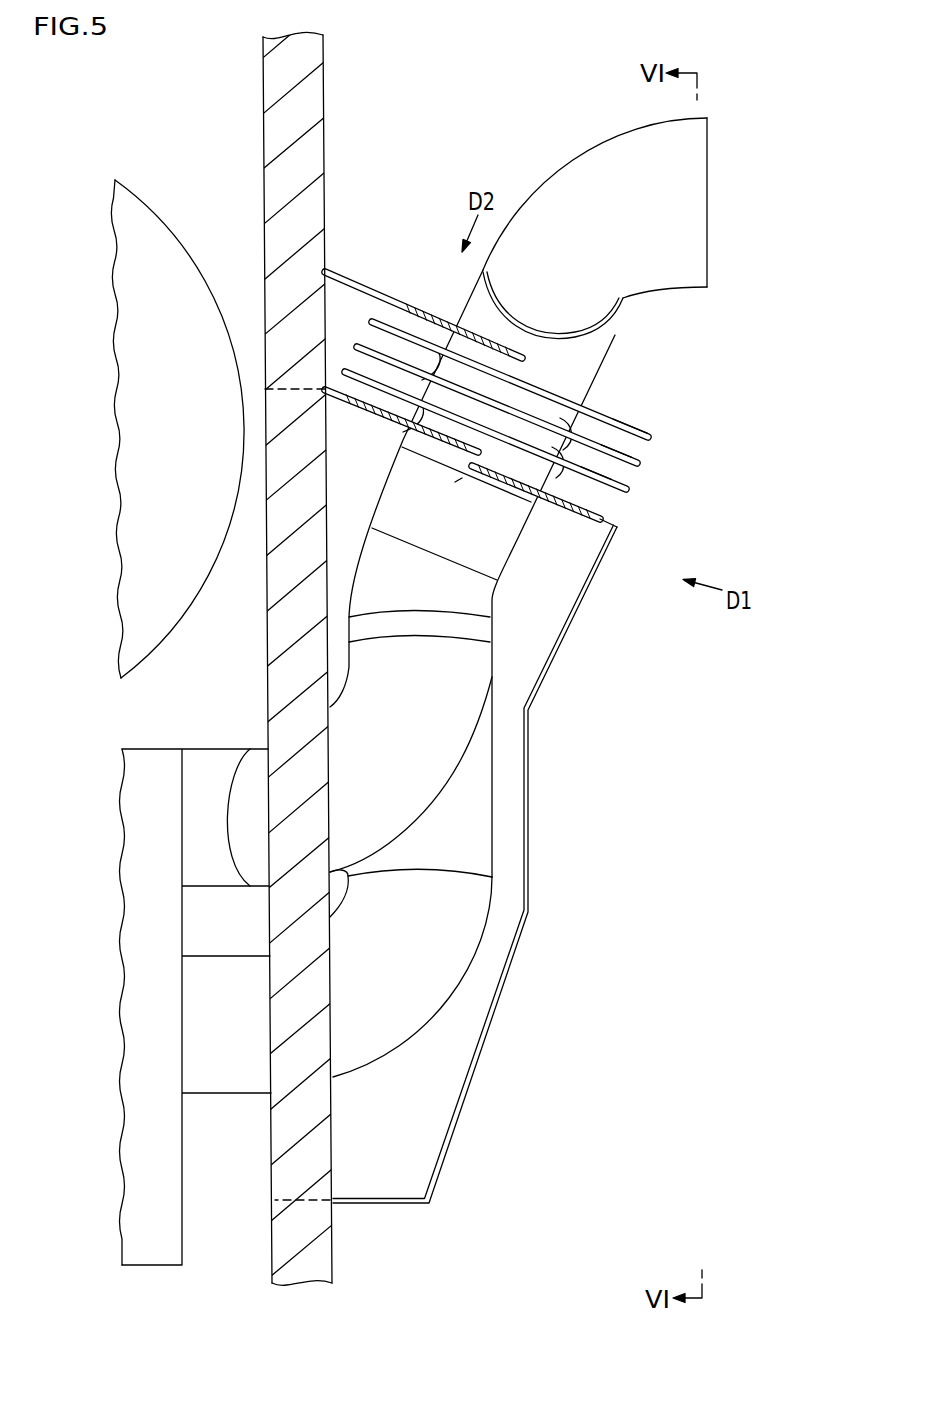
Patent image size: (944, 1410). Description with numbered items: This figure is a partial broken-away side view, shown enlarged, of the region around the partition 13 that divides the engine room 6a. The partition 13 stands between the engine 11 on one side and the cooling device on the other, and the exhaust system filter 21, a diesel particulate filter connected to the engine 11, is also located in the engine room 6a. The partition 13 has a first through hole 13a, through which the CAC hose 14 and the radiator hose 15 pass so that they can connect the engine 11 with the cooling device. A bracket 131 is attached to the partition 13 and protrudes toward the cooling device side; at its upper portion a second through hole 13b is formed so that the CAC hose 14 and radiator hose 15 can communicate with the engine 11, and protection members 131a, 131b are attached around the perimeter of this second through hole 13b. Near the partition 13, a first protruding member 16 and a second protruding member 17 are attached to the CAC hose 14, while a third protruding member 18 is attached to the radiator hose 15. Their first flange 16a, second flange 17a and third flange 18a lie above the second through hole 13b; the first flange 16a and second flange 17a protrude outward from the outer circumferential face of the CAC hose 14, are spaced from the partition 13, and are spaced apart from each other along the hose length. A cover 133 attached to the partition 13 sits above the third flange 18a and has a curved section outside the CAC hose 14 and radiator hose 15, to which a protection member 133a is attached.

The engine room 6a is at (177, 116).
The engine 11 is at (140, 907).
The partition 13 is at (305, 90).
The first through hole 13a is at (295, 389).
The second through hole 13b is at (455, 482).
The CAC hose 14 is at (455, 677).
The radiator hose 15 is at (468, 802).
The first protruding member 16 is at (652, 433).
The first flange 16a is at (648, 432).
The second protruding member 17 is at (628, 485).
The second flange 17a is at (590, 468).
The third protruding member 18 is at (640, 458).
The third flange 18a is at (615, 450).
The exhaust system filter 21 is at (140, 405).
The bracket 131 is at (603, 576).
The protection member 131a is at (590, 507).
The protection member 131b is at (463, 457).
The cover 133 is at (423, 298).
The protection member 133a is at (428, 308).